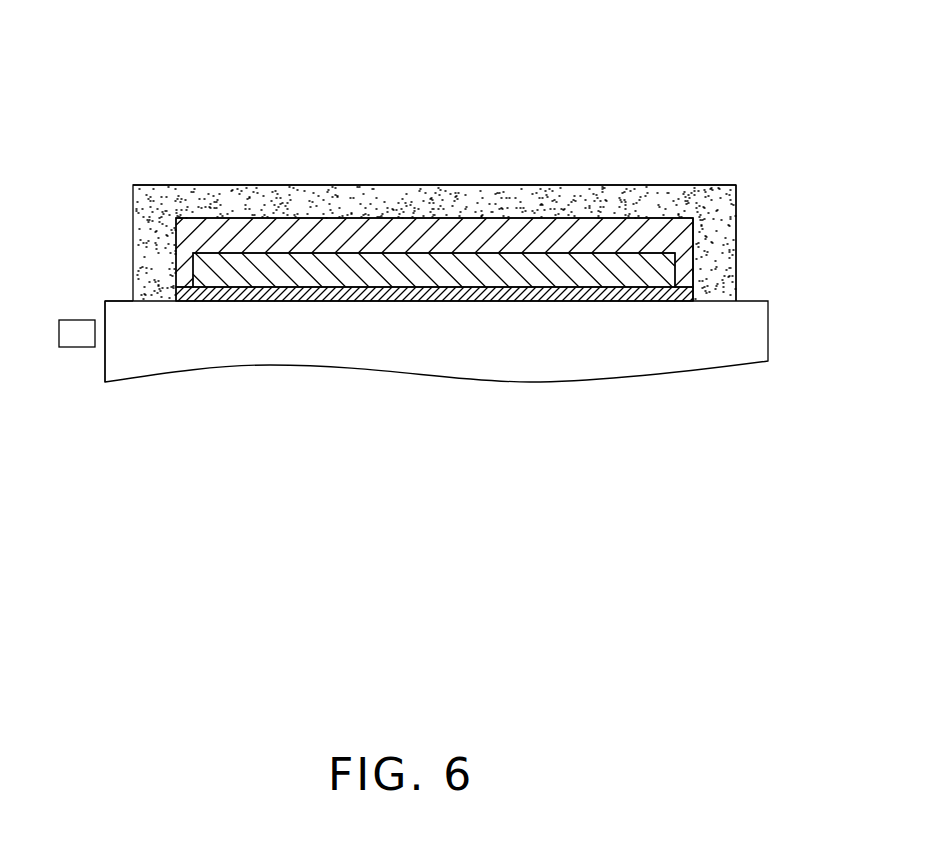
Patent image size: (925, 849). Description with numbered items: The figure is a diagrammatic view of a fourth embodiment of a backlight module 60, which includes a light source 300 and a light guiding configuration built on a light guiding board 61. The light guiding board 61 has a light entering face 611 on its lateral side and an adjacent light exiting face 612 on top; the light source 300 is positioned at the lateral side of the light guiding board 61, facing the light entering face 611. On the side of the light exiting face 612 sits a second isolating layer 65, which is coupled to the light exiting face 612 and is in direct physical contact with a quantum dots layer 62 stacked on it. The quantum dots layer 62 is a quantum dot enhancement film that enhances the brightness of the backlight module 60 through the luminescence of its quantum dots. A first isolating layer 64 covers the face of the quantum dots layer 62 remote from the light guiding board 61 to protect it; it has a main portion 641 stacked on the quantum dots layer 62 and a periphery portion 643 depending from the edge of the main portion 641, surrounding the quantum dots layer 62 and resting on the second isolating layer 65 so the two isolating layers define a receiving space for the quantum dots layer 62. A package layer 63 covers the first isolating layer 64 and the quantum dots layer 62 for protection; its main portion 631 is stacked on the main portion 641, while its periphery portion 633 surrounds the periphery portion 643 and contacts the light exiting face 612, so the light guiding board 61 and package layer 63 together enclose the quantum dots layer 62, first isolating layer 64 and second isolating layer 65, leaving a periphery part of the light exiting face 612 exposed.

The backlight module 60 is at (360, 62).
The light guiding board 61 is at (768, 334).
The light entering face 611 is at (104, 310).
The light exiting face 612 is at (119, 300).
The quantum dots layer 62 is at (677, 281).
The package layer 63 is at (602, 187).
The main portion of package layer 631 is at (447, 195).
The periphery portion of package layer 633 is at (723, 238).
The first isolating layer 64 is at (477, 208).
The main portion of first isolating layer 641 is at (255, 233).
The periphery portion of first isolating layer 643 is at (186, 272).
The second isolating layer 65 is at (348, 290).
The light source 300 is at (76, 348).